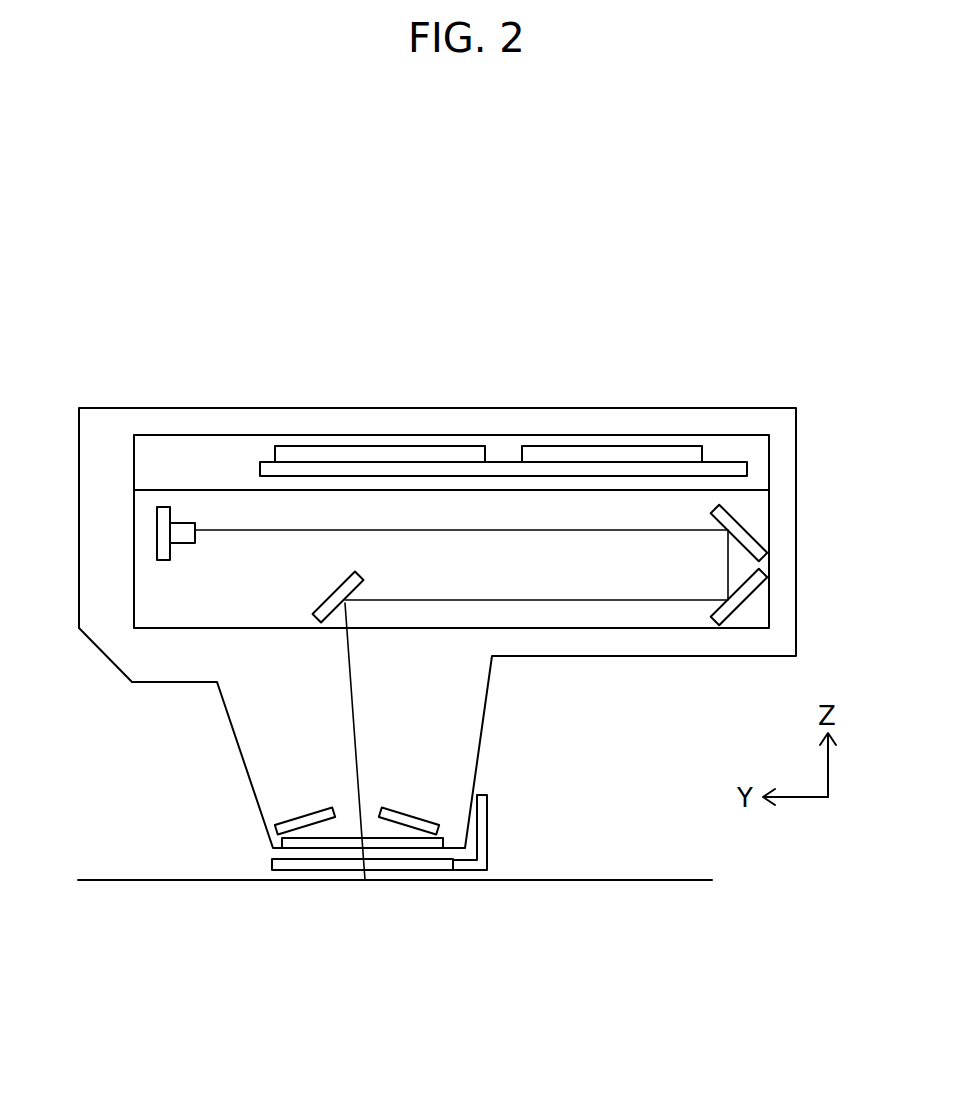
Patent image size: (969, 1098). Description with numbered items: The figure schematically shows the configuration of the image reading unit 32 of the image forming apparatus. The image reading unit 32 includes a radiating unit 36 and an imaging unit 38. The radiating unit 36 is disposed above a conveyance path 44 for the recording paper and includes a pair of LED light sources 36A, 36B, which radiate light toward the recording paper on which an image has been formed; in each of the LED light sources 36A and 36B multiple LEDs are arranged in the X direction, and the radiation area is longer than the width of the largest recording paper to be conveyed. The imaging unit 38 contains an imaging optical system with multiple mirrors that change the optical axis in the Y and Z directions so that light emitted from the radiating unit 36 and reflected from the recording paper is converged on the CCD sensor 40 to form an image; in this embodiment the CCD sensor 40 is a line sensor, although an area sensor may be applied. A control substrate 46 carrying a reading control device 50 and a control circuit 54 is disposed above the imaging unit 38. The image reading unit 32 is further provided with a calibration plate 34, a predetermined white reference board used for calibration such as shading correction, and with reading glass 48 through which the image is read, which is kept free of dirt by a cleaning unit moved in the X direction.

The image reading unit 32 is at (605, 209).
The calibration plate 34 is at (402, 880).
The radiating unit 36 is at (361, 767).
The LED light source 36A is at (313, 812).
The LED light source 36B is at (412, 790).
The imaging unit 38 is at (769, 518).
The CCD sensor 40 is at (166, 560).
The conveyance path 44 is at (523, 849).
The control substrate 46 is at (747, 462).
The reading glass 48 is at (302, 842).
The reading control device 50 is at (370, 447).
The control circuit 54 is at (632, 448).